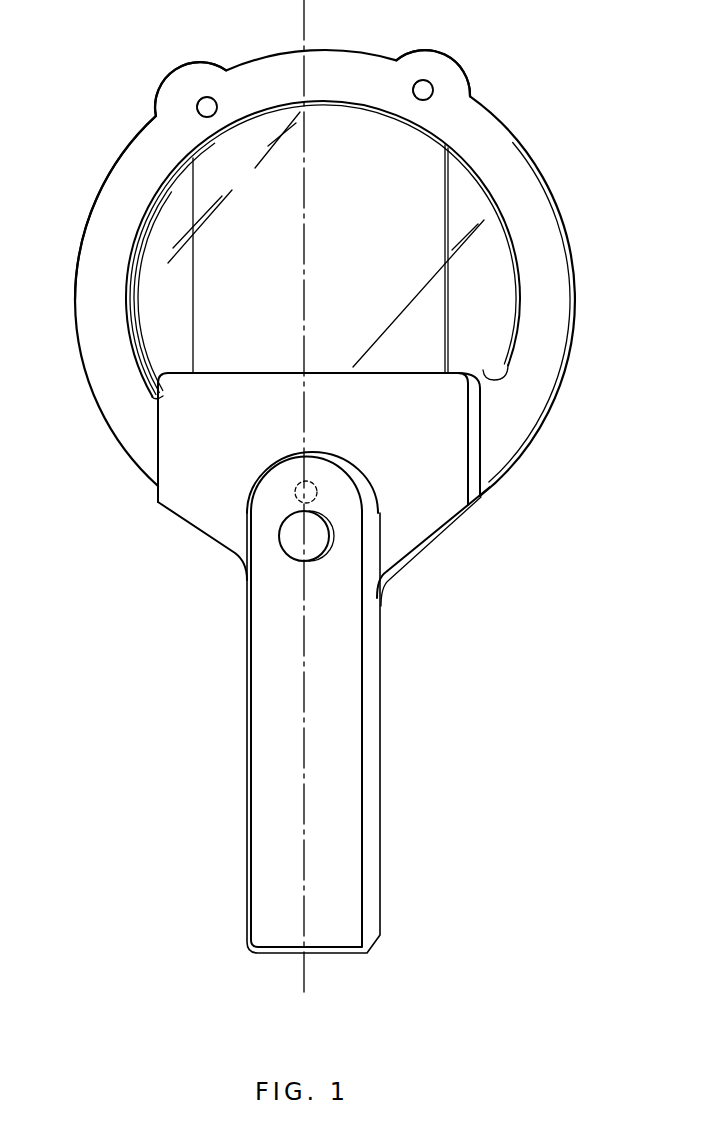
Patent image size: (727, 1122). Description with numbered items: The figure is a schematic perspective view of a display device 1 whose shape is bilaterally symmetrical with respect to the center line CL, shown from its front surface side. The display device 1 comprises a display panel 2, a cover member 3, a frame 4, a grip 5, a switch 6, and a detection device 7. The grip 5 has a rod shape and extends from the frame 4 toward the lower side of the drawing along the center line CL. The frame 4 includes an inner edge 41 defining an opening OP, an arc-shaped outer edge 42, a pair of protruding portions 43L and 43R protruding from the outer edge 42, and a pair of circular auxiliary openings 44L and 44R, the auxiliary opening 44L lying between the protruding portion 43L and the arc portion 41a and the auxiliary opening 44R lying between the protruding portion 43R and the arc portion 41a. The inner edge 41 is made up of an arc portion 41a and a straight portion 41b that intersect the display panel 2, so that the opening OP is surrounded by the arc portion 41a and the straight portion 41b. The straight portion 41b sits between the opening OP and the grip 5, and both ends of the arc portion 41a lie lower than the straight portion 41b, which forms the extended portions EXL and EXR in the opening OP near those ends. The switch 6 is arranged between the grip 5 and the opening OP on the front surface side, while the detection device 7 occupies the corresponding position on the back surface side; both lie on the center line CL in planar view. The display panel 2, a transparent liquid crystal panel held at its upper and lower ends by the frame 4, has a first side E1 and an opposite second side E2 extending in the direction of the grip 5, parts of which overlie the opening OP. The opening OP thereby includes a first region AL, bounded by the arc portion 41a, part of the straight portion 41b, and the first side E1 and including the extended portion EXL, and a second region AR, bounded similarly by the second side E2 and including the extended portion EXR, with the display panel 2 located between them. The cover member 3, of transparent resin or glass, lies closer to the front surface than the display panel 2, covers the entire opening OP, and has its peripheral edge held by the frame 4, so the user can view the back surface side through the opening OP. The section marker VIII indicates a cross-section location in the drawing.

The display device 1 is at (335, 514).
The display panel 2 is at (328, 132).
The cover member 3 is at (472, 200).
The frame 4 is at (90, 278).
The grip 5 is at (372, 758).
The switch 6 is at (291, 544).
The detection device 7 is at (300, 488).
The inner edge 41 is at (490, 430).
The arc portion 41a is at (464, 382).
The straight portion 41b is at (320, 394).
The outer edge 42 is at (105, 178).
The protruding portion 43L is at (217, 62).
The protruding portion 43R is at (445, 52).
The auxiliary opening 44L is at (200, 107).
The auxiliary opening 44R is at (433, 89).
The first region AL is at (109, 243).
The second region AR is at (541, 248).
The first side E1 is at (193, 318).
The second side E2 is at (450, 307).
The extended portion EXL is at (92, 369).
The extended portion EXR is at (566, 374).
The opening OP is at (372, 63).
The center line CL is at (305, 514).
The section line VIII is at (193, 113).